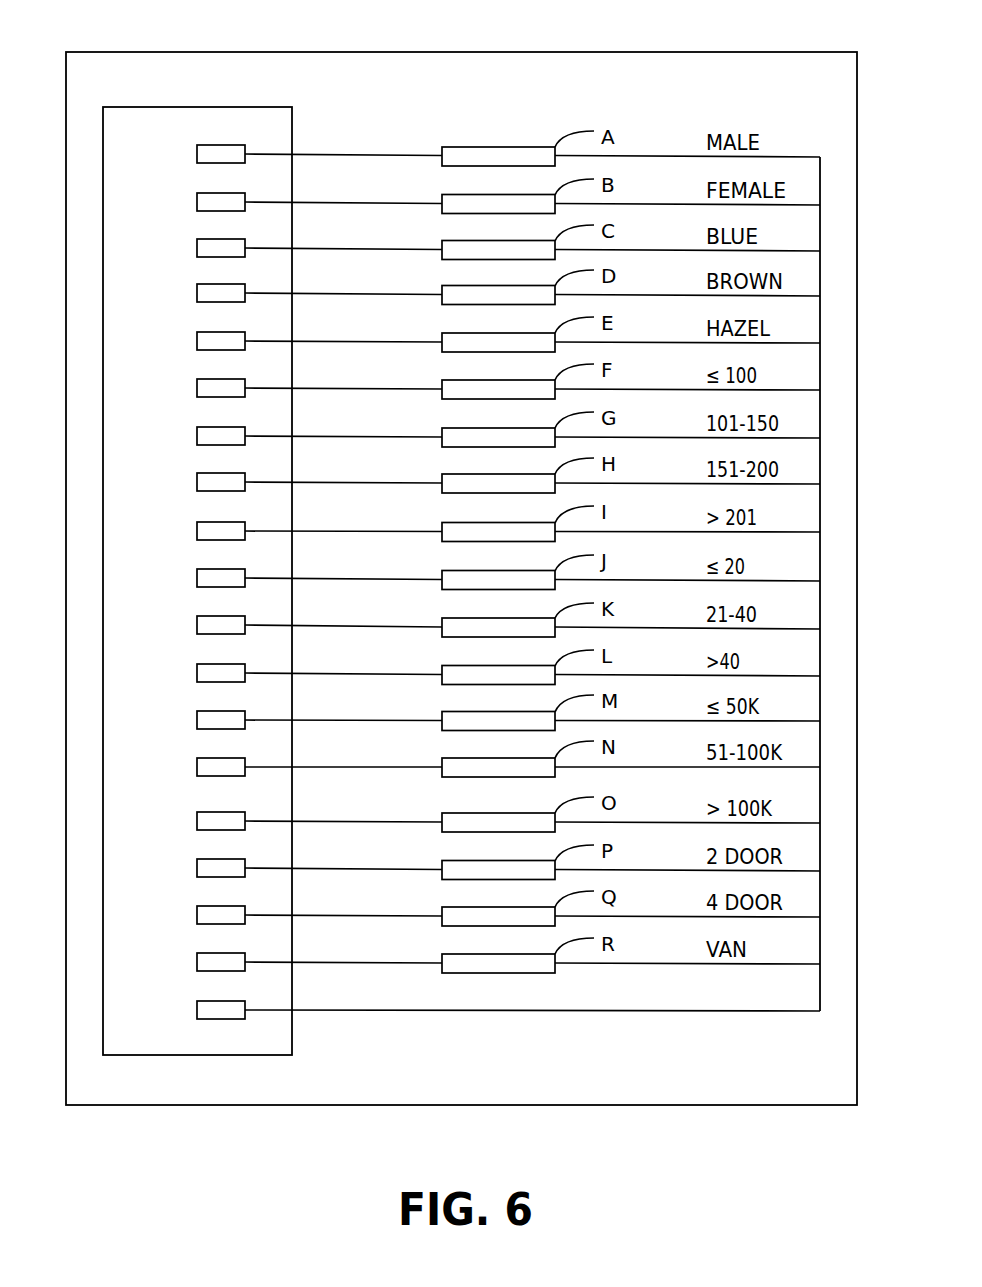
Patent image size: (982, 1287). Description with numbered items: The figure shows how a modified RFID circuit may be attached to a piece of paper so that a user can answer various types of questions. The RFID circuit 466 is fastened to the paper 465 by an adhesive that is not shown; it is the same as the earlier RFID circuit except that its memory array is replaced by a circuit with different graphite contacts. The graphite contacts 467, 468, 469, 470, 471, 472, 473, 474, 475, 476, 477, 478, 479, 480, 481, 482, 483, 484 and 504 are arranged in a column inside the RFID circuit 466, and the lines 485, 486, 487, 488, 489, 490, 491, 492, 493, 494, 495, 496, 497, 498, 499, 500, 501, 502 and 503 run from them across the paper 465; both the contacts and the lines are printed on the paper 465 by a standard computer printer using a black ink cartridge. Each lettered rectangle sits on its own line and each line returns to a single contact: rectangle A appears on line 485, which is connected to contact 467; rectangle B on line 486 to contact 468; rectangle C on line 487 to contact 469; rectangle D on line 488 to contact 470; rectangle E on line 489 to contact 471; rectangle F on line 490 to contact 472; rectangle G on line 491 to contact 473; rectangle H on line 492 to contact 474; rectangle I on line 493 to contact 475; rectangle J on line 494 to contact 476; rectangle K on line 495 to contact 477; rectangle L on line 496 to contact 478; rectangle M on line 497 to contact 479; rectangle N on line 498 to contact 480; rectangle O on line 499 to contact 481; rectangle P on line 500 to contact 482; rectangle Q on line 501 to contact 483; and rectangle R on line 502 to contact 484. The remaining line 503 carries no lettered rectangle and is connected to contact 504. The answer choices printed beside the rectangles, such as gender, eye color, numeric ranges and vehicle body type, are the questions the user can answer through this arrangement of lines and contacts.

The paper 465 is at (433, 52).
The RFID circuit 466 is at (243, 107).
The graphite contact 467 is at (197, 146).
The graphite contact 468 is at (197, 194).
The graphite contact 469 is at (197, 240).
The graphite contact 470 is at (197, 285).
The graphite contact 471 is at (197, 333).
The graphite contact 472 is at (197, 380).
The graphite contact 473 is at (197, 428).
The graphite contact 474 is at (197, 474).
The graphite contact 475 is at (197, 523).
The graphite contact 476 is at (197, 570).
The graphite contact 477 is at (197, 617).
The graphite contact 478 is at (197, 665).
The graphite contact 479 is at (197, 712).
The graphite contact 480 is at (197, 759).
The graphite contact 481 is at (197, 813).
The graphite contact 482 is at (197, 860).
The graphite contact 483 is at (197, 907).
The graphite contact 484 is at (197, 954).
The line 485 is at (388, 155).
The line 486 is at (388, 203).
The line 487 is at (388, 249).
The line 488 is at (388, 294).
The line 489 is at (388, 342).
The line 490 is at (388, 389).
The line 491 is at (388, 437).
The line 492 is at (388, 483).
The line 493 is at (388, 531).
The line 494 is at (388, 578).
The line 495 is at (388, 626).
The line 496 is at (388, 674).
The line 497 is at (388, 720).
The line 498 is at (388, 767).
The line 499 is at (388, 821).
The line 500 is at (388, 868).
The line 501 is at (388, 915).
The line 502 is at (388, 962).
The line 503 is at (393, 1010).
The graphite contact 504 is at (197, 1002).